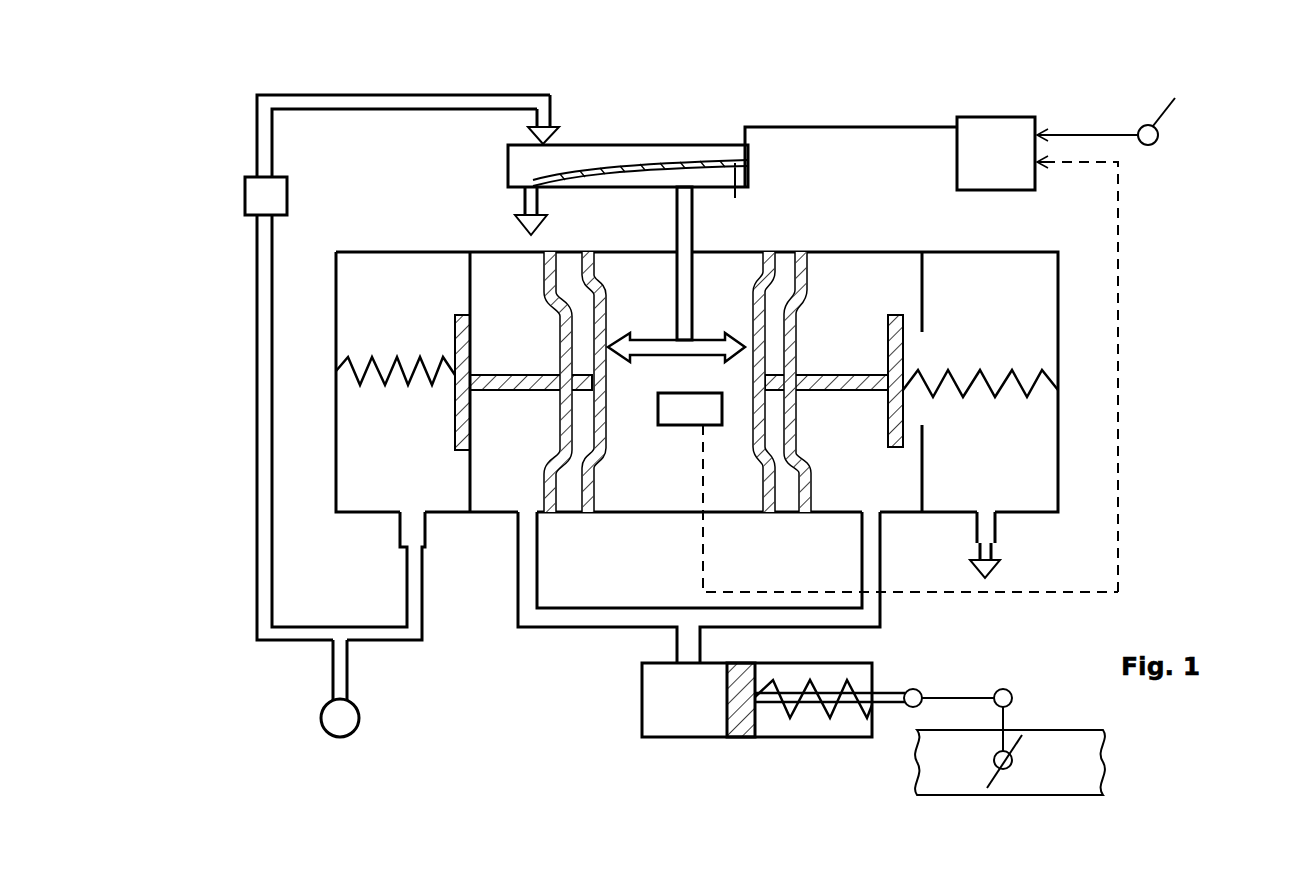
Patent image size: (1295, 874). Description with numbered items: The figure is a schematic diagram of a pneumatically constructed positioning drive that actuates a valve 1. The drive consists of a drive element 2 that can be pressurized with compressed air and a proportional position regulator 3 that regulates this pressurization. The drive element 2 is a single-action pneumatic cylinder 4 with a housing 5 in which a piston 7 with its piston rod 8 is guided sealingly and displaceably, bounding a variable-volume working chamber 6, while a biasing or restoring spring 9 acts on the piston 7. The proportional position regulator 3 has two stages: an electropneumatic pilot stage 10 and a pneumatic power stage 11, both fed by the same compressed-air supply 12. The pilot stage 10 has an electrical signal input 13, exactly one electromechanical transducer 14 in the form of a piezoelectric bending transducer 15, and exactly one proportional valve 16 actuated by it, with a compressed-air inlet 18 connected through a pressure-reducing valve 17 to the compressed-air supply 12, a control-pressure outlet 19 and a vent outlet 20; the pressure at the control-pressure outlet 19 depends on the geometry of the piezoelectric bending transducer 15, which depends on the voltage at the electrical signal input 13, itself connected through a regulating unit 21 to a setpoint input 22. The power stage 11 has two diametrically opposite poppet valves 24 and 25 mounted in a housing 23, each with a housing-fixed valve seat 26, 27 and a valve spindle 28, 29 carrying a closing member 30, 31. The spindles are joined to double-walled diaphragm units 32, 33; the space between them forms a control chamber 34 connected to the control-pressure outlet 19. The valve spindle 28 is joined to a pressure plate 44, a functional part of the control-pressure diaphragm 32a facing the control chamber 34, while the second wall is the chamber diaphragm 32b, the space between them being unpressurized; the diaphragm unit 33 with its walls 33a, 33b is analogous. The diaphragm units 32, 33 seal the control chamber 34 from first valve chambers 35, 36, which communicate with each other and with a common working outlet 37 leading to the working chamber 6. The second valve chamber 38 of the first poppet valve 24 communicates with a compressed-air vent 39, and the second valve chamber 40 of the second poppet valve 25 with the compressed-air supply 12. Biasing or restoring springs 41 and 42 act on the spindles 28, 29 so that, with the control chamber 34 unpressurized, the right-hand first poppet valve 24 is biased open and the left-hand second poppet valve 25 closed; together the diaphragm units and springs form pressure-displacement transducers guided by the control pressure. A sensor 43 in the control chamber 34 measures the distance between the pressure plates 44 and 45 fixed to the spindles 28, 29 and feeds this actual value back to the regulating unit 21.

The valve 1 is at (1085, 718).
The drive element 2 is at (746, 725).
The proportional position regulator 3 is at (318, 243).
The single-action pneumatic cylinder 4 is at (689, 740).
The housing 5 is at (866, 740).
The working chamber 6 is at (662, 712).
The piston 7 is at (742, 740).
The piston rod 8 is at (895, 696).
The biasing or restoring spring 9 is at (815, 740).
The electropneumatic pilot stage 10 is at (655, 115).
The pneumatic power stage 11 is at (1075, 256).
The compressed-air supply 12 is at (332, 732).
The electrical signal input 13 is at (736, 130).
The electromechanical transducer 14 is at (604, 157).
The piezoelectric bending transducer 15 is at (702, 160).
The proportional valve 16 is at (525, 165).
The pressure-reducing valve 17 is at (250, 180).
The compressed-air inlet 18 is at (540, 123).
The control-pressure outlet 19 is at (693, 215).
The vent outlet 20 is at (533, 275).
The regulating unit 21 is at (987, 117).
The setpoint input 22 is at (1119, 101).
The housing 23 is at (905, 348).
The first poppet valve 24 is at (907, 316).
The second poppet valve 25 is at (396, 281).
The valve seat 26 is at (925, 278).
The valve seat 27 is at (470, 460).
The valve spindle 28 is at (893, 283).
The valve spindle 29 is at (495, 397).
The closing member 30 is at (905, 325).
The closing member 31 is at (452, 330).
The double-walled diaphragm unit 32 is at (757, 448).
The control-pressure diaphragm 32a is at (770, 278).
The chamber diaphragm 32b is at (805, 275).
The double-walled diaphragm unit 33 is at (537, 290).
The bellows section 33a is at (585, 495).
The bellows section 33b is at (597, 262).
The control chamber 34 is at (657, 425).
The first valve chamber 35 is at (912, 250).
The first valve chamber 36 is at (480, 481).
The working outlet 37 is at (675, 643).
The second valve chamber 38 is at (1045, 292).
The compressed-air vent 39 is at (1000, 555).
The second valve chamber 40 is at (352, 345).
The biasing or restoring spring 41 is at (1040, 405).
The biasing or restoring spring 42 is at (387, 383).
The sensor 43 is at (590, 440).
The pressure plate 44 is at (830, 480).
The pressure plate 45 is at (565, 450).